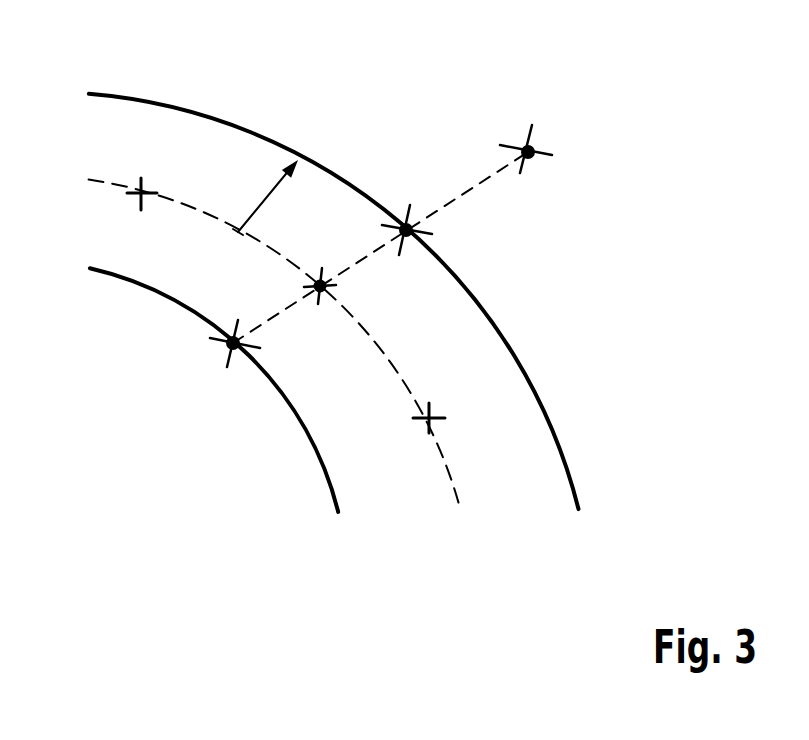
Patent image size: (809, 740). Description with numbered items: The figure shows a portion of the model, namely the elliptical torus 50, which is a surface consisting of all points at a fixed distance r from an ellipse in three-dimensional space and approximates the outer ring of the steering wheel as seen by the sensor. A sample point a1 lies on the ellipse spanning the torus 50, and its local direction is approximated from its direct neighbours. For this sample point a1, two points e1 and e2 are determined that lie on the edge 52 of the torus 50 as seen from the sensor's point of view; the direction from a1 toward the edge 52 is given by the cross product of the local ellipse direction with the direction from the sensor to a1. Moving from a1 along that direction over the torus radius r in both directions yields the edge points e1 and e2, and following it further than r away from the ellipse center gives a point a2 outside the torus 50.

The edge of the torus 52 is at (247, 135).
The elliptical torus 50 is at (556, 427).
The torus radius r is at (252, 212).
The first edge point e1 is at (218, 363).
The second edge point e2 is at (396, 201).
The sample point a1 is at (325, 295).
The point outside the torus a2 is at (530, 160).